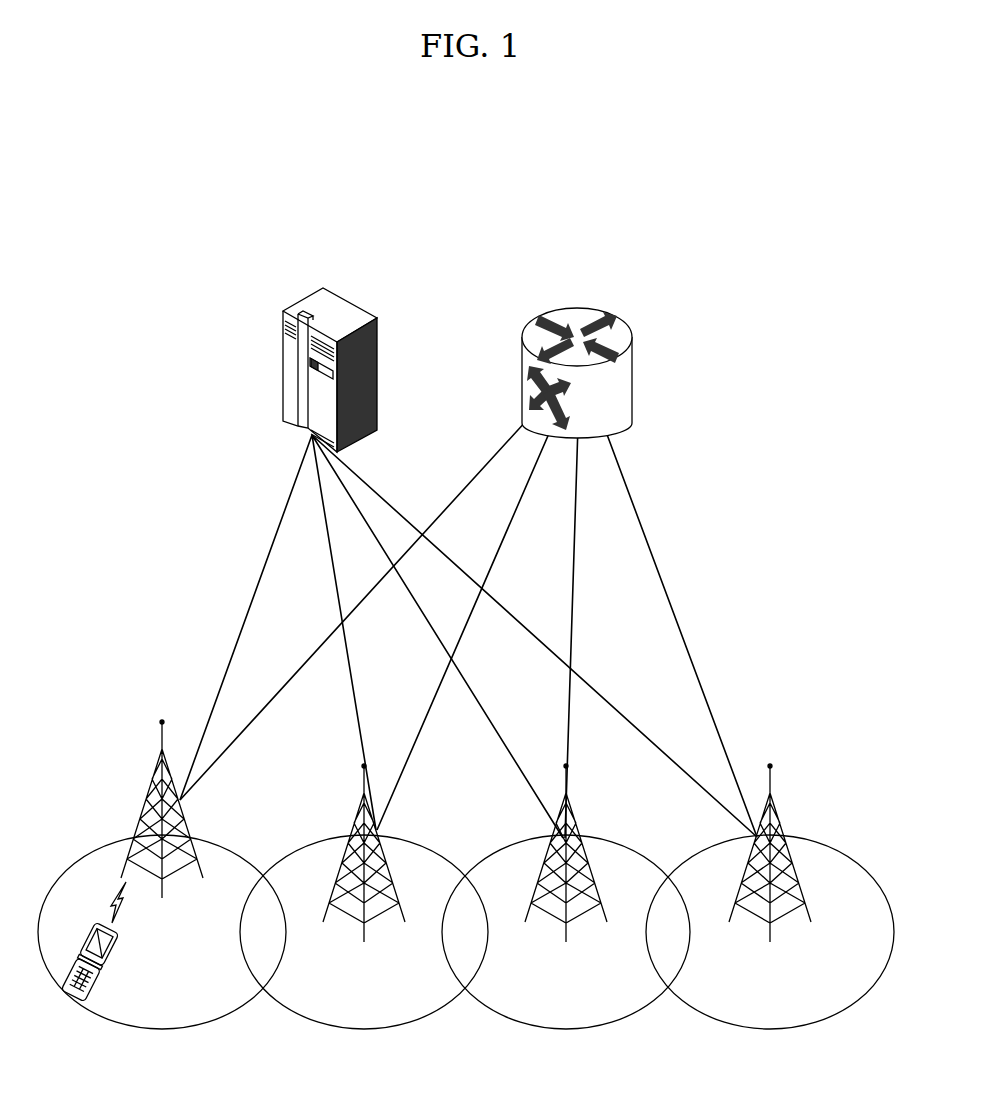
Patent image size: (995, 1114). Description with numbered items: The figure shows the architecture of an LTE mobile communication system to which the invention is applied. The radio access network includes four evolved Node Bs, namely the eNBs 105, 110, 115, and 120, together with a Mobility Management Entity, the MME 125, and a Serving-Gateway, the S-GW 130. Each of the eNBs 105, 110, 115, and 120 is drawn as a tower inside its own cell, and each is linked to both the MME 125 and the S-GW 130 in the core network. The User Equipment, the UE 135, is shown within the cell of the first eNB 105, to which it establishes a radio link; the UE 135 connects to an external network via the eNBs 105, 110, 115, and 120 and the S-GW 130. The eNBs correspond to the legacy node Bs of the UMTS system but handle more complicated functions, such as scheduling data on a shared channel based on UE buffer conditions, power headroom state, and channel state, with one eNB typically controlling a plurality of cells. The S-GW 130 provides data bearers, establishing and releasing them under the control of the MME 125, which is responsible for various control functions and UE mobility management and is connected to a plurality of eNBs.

The evolved Node B (eNB) 105 is at (147, 782).
The evolved Node B (eNB) 110 is at (355, 810).
The evolved Node B (eNB) 115 is at (577, 812).
The evolved Node B (eNB) 120 is at (780, 812).
The Mobility Management Entity (MME) 125 is at (315, 308).
The Serving-Gateway (S-GW) 130 is at (573, 313).
The User Equipment (UE) 135 is at (113, 955).